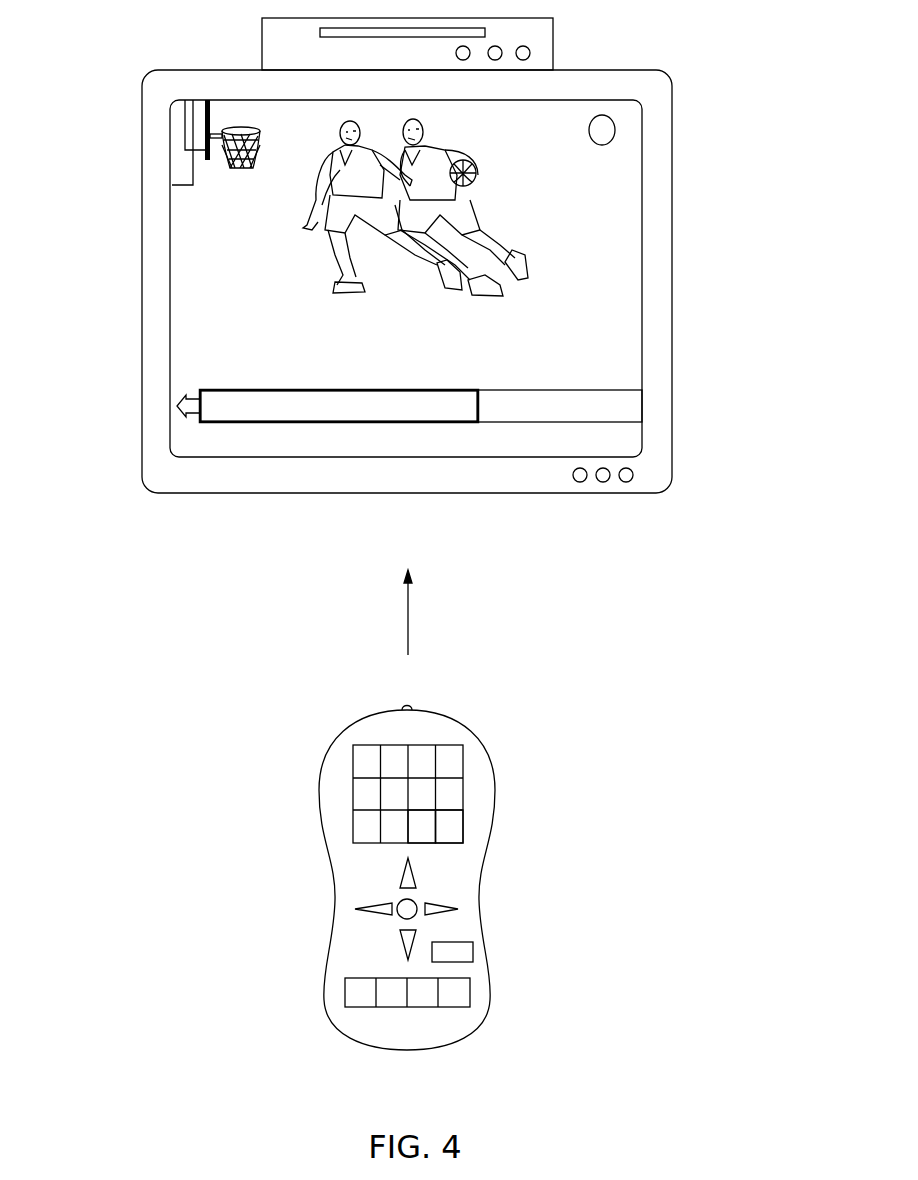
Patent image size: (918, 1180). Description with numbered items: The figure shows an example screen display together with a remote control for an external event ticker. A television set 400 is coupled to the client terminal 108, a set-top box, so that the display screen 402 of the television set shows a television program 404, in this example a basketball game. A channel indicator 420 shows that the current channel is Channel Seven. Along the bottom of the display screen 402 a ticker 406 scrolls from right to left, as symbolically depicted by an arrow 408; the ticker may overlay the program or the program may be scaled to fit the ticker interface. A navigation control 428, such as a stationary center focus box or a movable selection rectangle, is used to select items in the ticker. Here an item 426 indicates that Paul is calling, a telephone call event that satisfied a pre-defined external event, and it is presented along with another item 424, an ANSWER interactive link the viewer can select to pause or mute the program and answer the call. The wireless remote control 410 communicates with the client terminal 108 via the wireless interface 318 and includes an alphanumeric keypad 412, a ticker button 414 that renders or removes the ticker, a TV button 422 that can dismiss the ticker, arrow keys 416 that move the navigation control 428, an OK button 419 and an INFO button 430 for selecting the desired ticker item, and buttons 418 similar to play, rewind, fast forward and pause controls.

The client terminal 108 is at (262, 29).
The wireless interface 318 is at (530, 53).
The television set 400 is at (156, 95).
The display screen 402 is at (645, 158).
The television program 404 is at (565, 252).
The channel indicator 420 is at (618, 121).
The ticker 406 is at (421, 481).
The arrow 408 is at (171, 420).
The navigation control 428 is at (205, 422).
The item 426 is at (252, 422).
The item 424 is at (513, 422).
The wireless remote control 410 is at (357, 731).
The alphanumeric keypad 412 is at (411, 807).
The ticker button 414 is at (463, 825).
The TV button 422 is at (430, 843).
The arrow keys 416 is at (437, 893).
The OK button 419 is at (396, 921).
The INFO button 430 is at (473, 957).
The buttons 418 is at (472, 992).